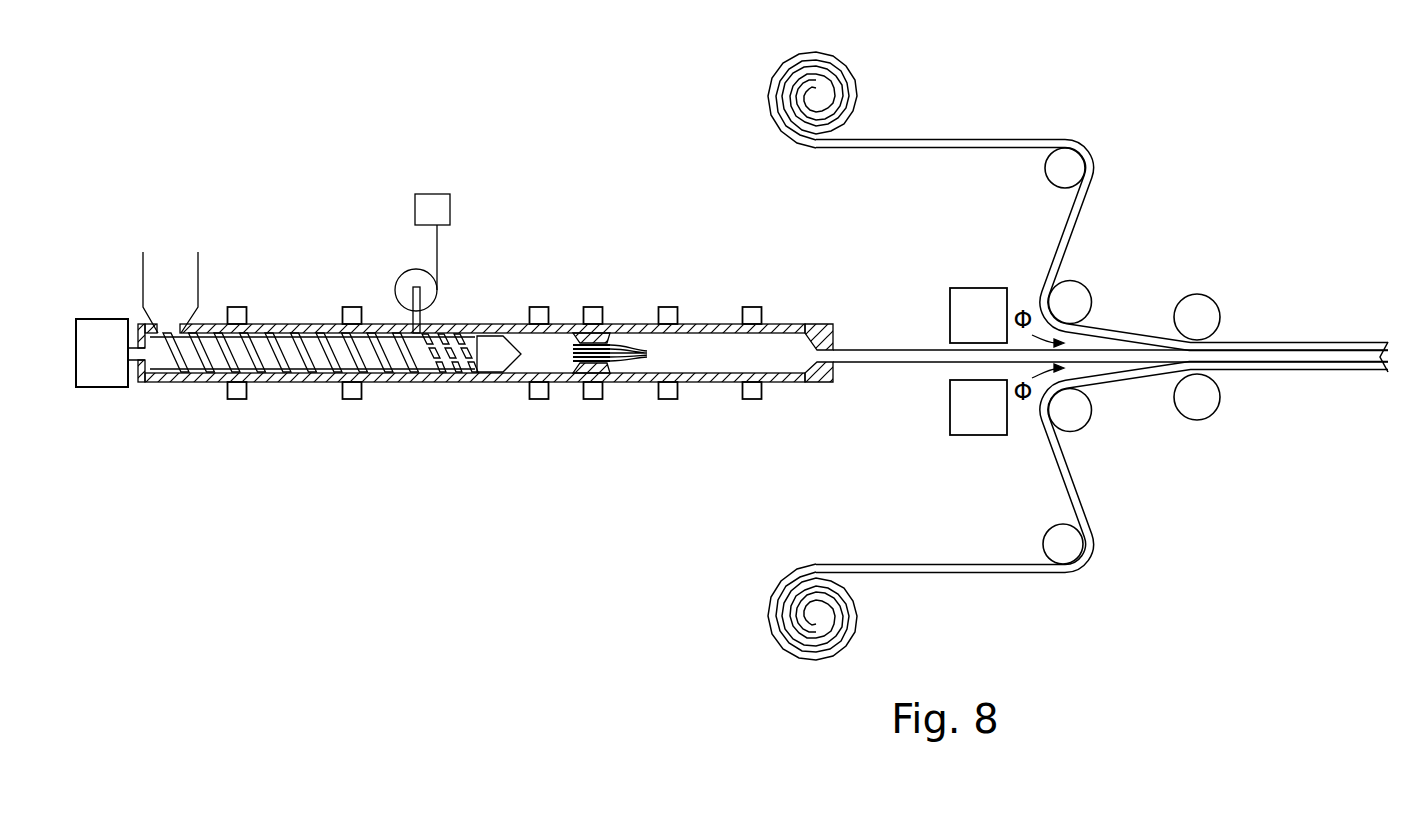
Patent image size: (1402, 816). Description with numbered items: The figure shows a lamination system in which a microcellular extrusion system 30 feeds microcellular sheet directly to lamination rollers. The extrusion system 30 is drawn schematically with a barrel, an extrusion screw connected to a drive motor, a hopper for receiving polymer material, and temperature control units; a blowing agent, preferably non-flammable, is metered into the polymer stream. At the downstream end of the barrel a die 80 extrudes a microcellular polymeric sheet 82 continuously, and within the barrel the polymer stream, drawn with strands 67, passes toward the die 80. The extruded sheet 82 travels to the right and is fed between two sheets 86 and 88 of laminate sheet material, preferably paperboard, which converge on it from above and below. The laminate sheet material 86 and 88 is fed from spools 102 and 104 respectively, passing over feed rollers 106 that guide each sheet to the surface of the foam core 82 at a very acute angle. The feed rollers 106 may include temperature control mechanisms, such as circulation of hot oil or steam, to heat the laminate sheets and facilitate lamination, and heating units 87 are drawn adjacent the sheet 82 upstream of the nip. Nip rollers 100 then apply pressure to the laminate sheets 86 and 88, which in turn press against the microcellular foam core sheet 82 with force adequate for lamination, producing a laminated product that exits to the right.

The microcellular extrusion system 30 is at (311, 198).
The fiber strands 67 is at (625, 355).
The die 80 is at (848, 337).
The microcellular polymeric sheet 82 is at (925, 363).
The laminate sheet 86 is at (1122, 328).
The heaters 87 is at (970, 288).
The laminate sheet 88 is at (1122, 383).
The nip rollers 100 is at (1206, 313).
The spool 102 is at (848, 117).
The spool 104 is at (848, 618).
The feed rollers 106 is at (1050, 170).